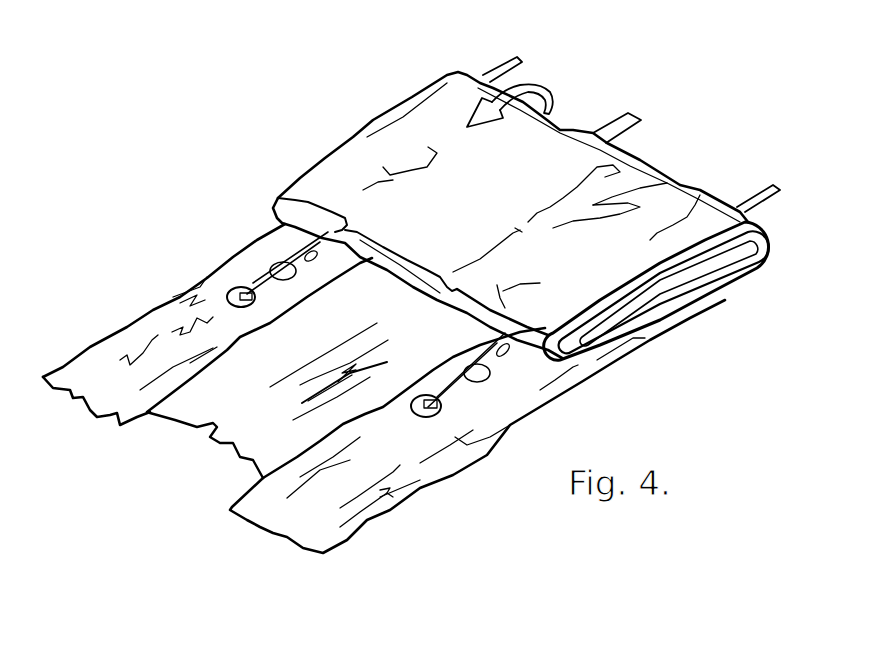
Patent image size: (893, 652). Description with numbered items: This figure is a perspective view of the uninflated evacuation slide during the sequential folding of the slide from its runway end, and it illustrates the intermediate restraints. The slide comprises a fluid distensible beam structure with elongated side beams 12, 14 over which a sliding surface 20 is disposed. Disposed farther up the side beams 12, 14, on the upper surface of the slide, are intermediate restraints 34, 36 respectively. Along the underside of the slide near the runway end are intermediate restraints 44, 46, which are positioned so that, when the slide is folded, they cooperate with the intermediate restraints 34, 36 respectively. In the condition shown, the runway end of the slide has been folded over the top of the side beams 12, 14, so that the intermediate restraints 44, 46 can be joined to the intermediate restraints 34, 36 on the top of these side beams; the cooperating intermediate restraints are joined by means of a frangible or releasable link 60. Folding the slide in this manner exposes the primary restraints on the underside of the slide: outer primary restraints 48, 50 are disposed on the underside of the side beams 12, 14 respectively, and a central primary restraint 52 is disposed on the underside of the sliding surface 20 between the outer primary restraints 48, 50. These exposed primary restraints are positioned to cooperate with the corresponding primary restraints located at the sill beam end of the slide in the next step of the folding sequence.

The side beam 12 is at (128, 320).
The side beam 14 is at (367, 520).
The sliding surface 20 is at (219, 401).
The intermediate restraint 34 is at (438, 414).
The intermediate restraint 36 is at (266, 300).
The intermediate restraint 44 is at (480, 357).
The intermediate restraint 46 is at (292, 232).
The outer primary restraint 48 is at (503, 64).
The outer primary restraint 50 is at (773, 185).
The central primary restraint 52 is at (628, 113).
The frangible or releasable link 60 is at (315, 262).